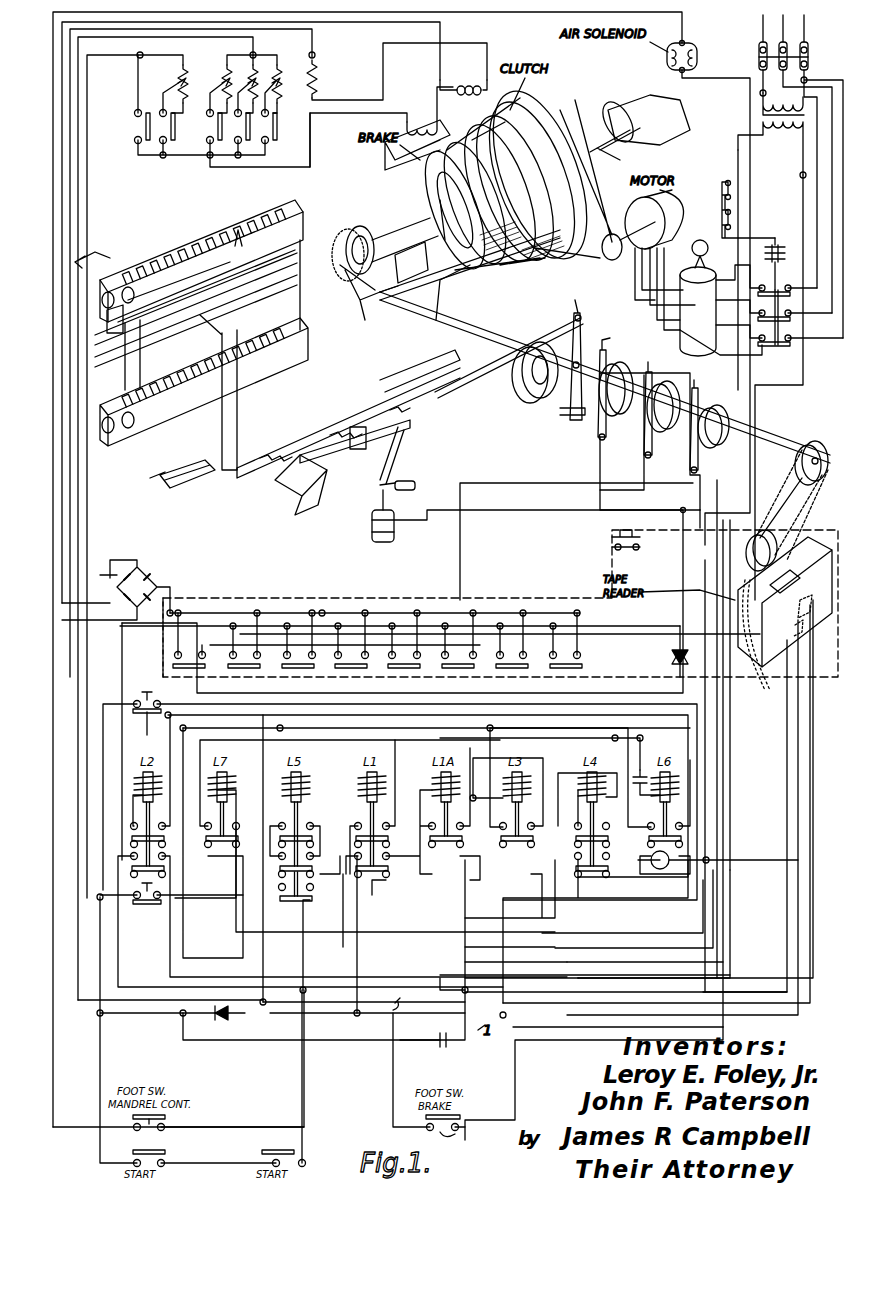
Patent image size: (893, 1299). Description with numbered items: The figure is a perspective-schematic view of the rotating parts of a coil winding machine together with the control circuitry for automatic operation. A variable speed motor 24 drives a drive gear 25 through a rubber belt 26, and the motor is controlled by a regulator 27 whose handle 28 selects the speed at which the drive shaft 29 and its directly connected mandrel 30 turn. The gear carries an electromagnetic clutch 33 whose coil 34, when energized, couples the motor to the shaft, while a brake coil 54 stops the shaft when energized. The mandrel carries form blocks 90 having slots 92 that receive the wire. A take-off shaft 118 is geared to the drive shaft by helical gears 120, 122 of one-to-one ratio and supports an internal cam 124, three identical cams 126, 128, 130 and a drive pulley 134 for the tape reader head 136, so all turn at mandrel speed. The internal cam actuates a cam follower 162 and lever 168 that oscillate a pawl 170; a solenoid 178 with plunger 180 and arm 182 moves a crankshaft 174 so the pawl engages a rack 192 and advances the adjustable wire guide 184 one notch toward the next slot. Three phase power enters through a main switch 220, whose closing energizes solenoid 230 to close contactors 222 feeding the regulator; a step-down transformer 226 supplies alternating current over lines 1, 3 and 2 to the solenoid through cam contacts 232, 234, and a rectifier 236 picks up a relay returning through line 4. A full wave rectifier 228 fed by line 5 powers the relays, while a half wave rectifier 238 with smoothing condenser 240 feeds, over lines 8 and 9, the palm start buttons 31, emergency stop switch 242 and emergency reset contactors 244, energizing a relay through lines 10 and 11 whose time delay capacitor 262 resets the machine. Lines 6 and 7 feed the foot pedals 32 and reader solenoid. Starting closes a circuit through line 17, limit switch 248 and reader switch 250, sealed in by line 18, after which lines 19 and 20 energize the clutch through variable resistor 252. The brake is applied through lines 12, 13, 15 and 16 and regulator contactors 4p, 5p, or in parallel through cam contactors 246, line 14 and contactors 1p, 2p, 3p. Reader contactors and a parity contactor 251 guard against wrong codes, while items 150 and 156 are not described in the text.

The line 1 is at (738, 188).
The return line 2 is at (803, 188).
The line 3 is at (600, 500).
The line 4 is at (380, 610).
The line 5 is at (565, 570).
The line 6 is at (53, 80).
The line 7 is at (434, 1008).
The line 8 is at (100, 1072).
The line 9 is at (82, 950).
The line 10 is at (230, 705).
The line 11 is at (490, 918).
The line 12 is at (723, 828).
The line 13 is at (88, 218).
The line 14 is at (113, 198).
The line 15 is at (310, 140).
The line 16 is at (70, 98).
The line 17 is at (118, 963).
The line 18 is at (692, 762).
The line 19 is at (82, 800).
The line 20 is at (72, 162).
The motor 24 is at (648, 190).
The drive gear 25 is at (455, 265).
The rubber belt 26 is at (585, 254).
The regulator 27 is at (698, 311).
The handle 28 is at (690, 252).
The drive shaft 29 is at (400, 225).
The mandrel 30 is at (197, 205).
The palm start buttons 31 is at (165, 1152).
The foot pedals 32 is at (148, 1128).
The clutch 33 is at (475, 128).
The coil 34 is at (465, 75).
The brake coil 54 is at (422, 115).
The form blocks 90 is at (190, 215).
The slots 92 is at (240, 230).
The take-off shaft 118 is at (403, 312).
The helical gear 120 is at (360, 225).
The helical gear 122 is at (360, 305).
The internal cam 124 is at (530, 386).
The cam 126 is at (614, 415).
The cam 128 is at (662, 430).
The cam 130 is at (712, 445).
The drive pulley 134 is at (822, 432).
The tape reader head 136 is at (812, 535).
The tape reader contacts 150 is at (828, 615).
The carriage 156 is at (203, 355).
The cam follower 162 is at (585, 320).
The lever 168 is at (472, 375).
The pawl 170 is at (350, 418).
The crankshaft 174 is at (410, 450).
The solenoid 178 is at (404, 601).
The plunger 180 is at (375, 503).
The arm 182 is at (412, 498).
The adjustable wire guide 184 is at (200, 418).
The rack 192 is at (410, 370).
The main switch 220 is at (808, 55).
The contactors 222 is at (762, 350).
The step-down transformer 226 is at (763, 120).
The full wave rectifier 228 is at (160, 580).
The solenoid 230 is at (775, 232).
The contacts 232 is at (605, 345).
The contacts 234 is at (652, 358).
The rectifier 236 is at (672, 658).
The half wave rectifier 238 is at (228, 1018).
The smoothing condenser 240 is at (448, 1047).
The emergency stop switch 242 is at (147, 905).
The emergency reset contactors 244 is at (400, 790).
The cam contactors 246 is at (700, 385).
The limit switch 248 is at (185, 488).
The reader switch 250 is at (608, 535).
The contactor 251 is at (767, 635).
The variable resistor 252 is at (335, 62).
The time delay capacitor 262 is at (645, 760).
The contactor 1' 1p is at (266, 111).
The contactor 2' 2p is at (240, 111).
The contactor 3' 3p is at (213, 111).
The contactor 4' 4p is at (168, 111).
The contactor 5' 5p is at (137, 99).